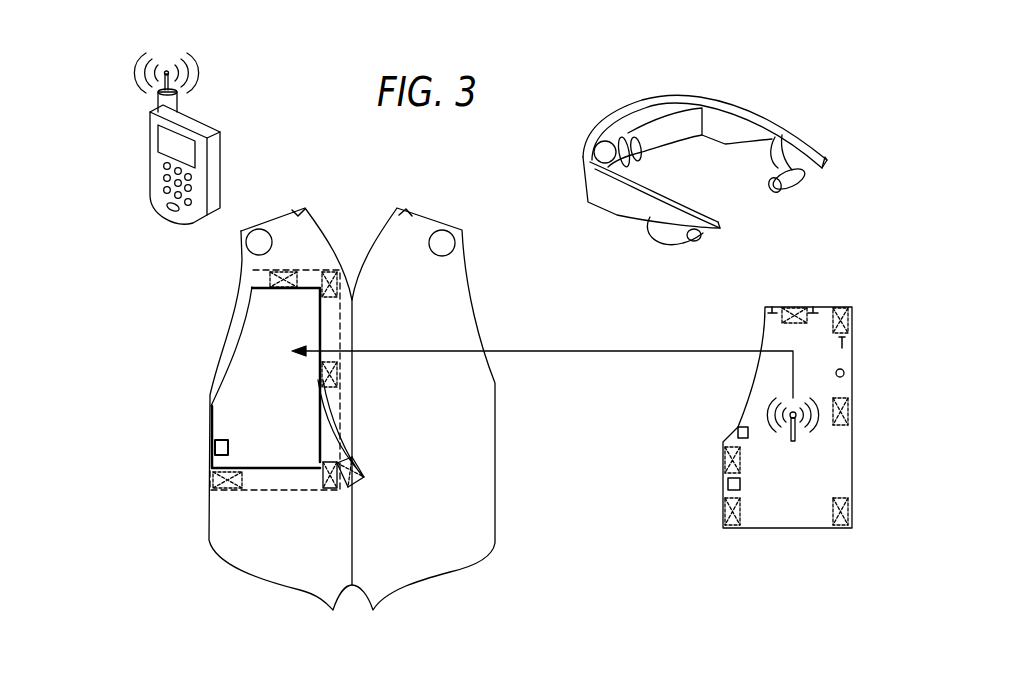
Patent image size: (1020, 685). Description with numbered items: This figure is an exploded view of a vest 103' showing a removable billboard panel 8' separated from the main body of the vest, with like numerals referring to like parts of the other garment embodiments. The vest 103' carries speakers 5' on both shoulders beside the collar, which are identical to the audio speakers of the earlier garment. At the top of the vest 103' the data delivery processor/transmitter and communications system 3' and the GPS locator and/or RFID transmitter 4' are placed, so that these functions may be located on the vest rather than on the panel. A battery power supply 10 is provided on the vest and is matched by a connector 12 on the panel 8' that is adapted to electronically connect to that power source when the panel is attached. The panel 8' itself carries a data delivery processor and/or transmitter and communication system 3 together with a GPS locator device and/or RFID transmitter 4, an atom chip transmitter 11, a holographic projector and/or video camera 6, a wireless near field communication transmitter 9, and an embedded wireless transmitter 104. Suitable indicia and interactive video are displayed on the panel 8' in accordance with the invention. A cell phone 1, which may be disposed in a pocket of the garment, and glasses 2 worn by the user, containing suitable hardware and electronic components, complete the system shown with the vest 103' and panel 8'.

The cell phone 1 is at (150, 153).
The glasses 2 is at (723, 223).
The data delivery processor and/or transmitter and communication system 3 is at (751, 298).
The data delivery processor/transmitter and communications system 3' is at (297, 177).
The GPS locator device and/or RFID transmitter 4 is at (835, 297).
The GPS locator and/or RFID transmitter 4' is at (407, 182).
The speakers 5' is at (356, 249).
The holographic projector and/or video camera 6 is at (845, 373).
The panel 8' is at (805, 417).
The wireless near field communication transmitter 9 is at (738, 433).
The battery power supply 10 is at (215, 446).
The atom chip transmitter 11 is at (845, 343).
The connector 12 is at (727, 483).
The vest 103' is at (403, 409).
The wireless transmitter 104 is at (769, 415).